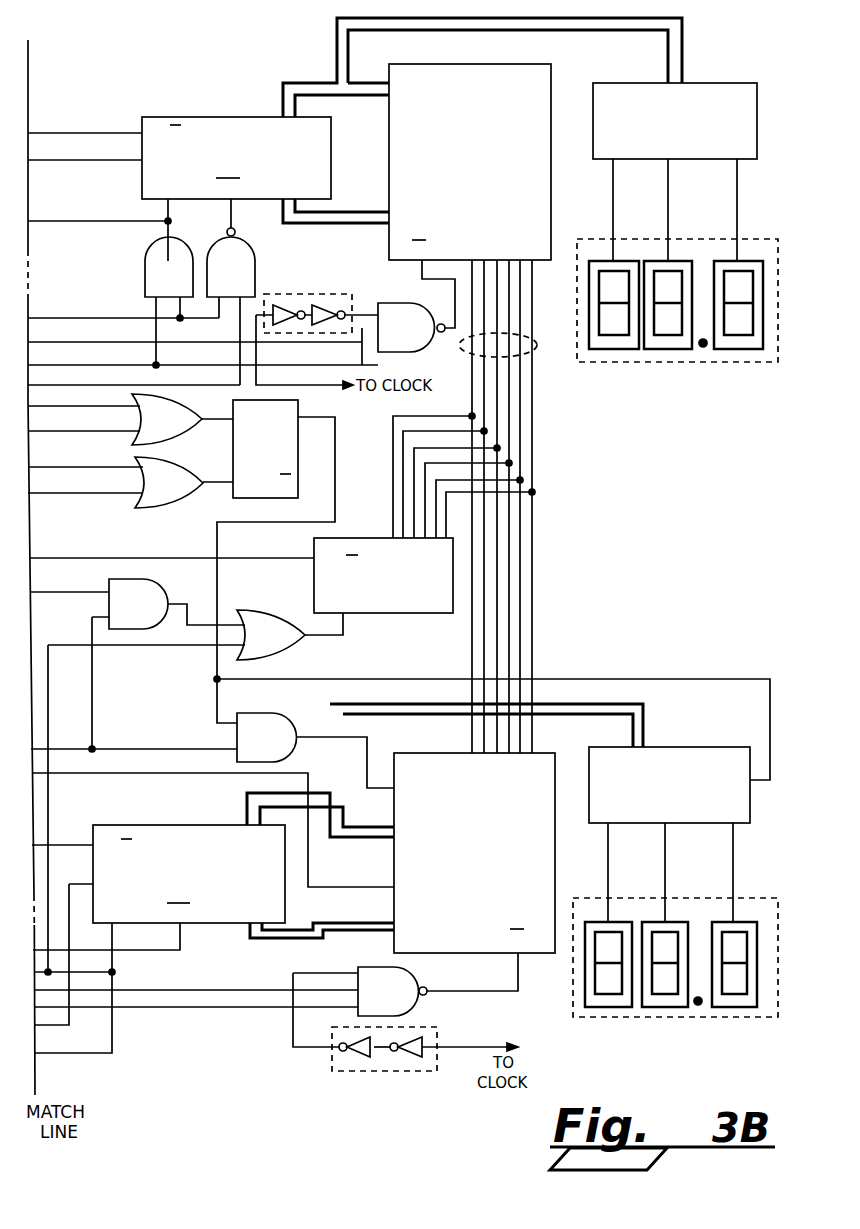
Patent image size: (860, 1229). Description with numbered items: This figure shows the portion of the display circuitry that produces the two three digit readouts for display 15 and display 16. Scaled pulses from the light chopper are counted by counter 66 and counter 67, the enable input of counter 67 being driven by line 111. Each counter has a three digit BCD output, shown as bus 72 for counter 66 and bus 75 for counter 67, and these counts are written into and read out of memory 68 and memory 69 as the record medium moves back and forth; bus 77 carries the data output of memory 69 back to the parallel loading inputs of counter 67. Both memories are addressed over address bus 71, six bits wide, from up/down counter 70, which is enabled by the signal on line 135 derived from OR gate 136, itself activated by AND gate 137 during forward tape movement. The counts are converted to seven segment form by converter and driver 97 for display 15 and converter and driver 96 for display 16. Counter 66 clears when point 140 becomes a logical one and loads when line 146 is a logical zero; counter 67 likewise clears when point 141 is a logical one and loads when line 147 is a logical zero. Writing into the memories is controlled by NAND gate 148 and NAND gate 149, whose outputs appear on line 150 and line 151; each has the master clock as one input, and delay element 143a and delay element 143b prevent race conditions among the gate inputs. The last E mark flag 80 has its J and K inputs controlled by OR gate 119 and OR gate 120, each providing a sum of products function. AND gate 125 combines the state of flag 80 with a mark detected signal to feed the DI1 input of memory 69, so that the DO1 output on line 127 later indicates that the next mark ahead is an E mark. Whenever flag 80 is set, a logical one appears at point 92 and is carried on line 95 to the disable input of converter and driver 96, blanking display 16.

The counter 66 is at (243, 117).
The bus 72 is at (308, 83).
The memory 68 is at (552, 78).
The converter and driver 97 is at (750, 83).
The display 15 is at (703, 362).
The point 140 is at (171, 223).
The line 146 is at (236, 233).
The delay element 143a is at (324, 294).
The line 150 is at (420, 279).
The NAND gate 148 is at (417, 352).
The address bus 71 is at (537, 345).
The OR gate 119 is at (178, 395).
The OR gate 120 is at (182, 459).
The last E mark flag 80 is at (298, 448).
The AND gate 137 is at (140, 579).
The OR gate 136 is at (251, 610).
The line 135 is at (323, 637).
The up/down counter 70 is at (405, 613).
The point 92 is at (215, 680).
The line 95 is at (733, 677).
The AND gate 125 is at (257, 713).
The line 127 is at (309, 862).
The counter 67 is at (162, 825).
The line 111 is at (80, 884).
The point 141 is at (114, 972).
The line 147 is at (182, 938).
The bus 75 is at (247, 793).
The bus 77 is at (275, 940).
The memory 69 is at (555, 775).
The NAND gate 149 is at (418, 1005).
The line 151 is at (492, 991).
The delay element 143b is at (385, 1071).
The converter and driver 96 is at (727, 747).
The display 16 is at (688, 1017).